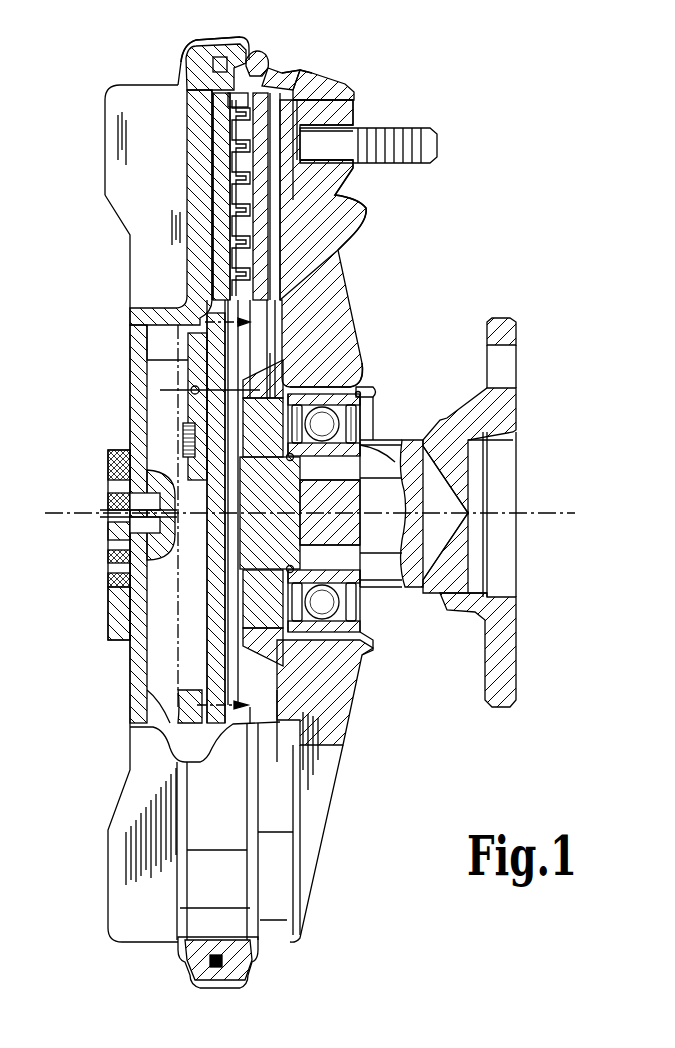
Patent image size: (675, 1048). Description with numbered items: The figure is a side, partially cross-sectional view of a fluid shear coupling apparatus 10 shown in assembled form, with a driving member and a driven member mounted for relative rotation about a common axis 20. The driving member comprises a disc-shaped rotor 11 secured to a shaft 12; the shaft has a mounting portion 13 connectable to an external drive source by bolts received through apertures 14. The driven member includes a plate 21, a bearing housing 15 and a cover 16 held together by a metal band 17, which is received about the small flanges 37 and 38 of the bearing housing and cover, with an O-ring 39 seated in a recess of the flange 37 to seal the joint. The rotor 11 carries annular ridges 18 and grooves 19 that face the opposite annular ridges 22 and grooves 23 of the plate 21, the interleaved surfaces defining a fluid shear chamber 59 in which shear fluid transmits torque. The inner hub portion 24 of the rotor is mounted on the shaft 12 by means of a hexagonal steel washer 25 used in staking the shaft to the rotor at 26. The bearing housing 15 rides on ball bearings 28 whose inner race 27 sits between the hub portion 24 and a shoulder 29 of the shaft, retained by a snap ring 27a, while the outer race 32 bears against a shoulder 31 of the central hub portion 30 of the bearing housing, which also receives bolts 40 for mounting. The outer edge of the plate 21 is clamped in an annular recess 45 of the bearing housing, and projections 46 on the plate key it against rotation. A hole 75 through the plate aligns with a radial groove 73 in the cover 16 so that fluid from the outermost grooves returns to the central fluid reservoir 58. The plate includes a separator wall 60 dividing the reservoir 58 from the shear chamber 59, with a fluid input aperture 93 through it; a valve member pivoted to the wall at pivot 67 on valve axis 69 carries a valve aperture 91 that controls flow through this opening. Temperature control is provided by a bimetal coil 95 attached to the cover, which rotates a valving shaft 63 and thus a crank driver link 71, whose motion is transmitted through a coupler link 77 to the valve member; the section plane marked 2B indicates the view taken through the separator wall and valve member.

The fluid shear coupling apparatus 10 is at (125, 957).
The rotor 11 is at (278, 291).
The shaft 12 is at (373, 553).
The mounting portion 13 is at (509, 412).
The apertures 14 is at (508, 366).
The bearing housing 15 is at (330, 102).
The cover 16 is at (130, 92).
The band 17 is at (225, 893).
The annular ridges 18 is at (232, 102).
The grooves 19 is at (236, 125).
The common axis 20 is at (70, 514).
The plate 21 is at (181, 80).
The annular ridges 22 is at (240, 146).
The grooves 23 is at (242, 168).
The hub portion 24 is at (228, 420).
The hexagonal steel washer 25 is at (293, 459).
The staking 26 is at (273, 456).
The inner race 27 is at (428, 466).
The retaining snap ring 27a is at (297, 551).
The ball bearings 28 is at (336, 641).
The shoulder 29 is at (365, 470).
The central hub portion 30 is at (352, 681).
The shoulder 31 is at (374, 388).
The outer race 32 is at (376, 378).
The flange 37 is at (252, 56).
The flange 38 is at (186, 58).
The O-ring 39 is at (224, 60).
The bolts 40 is at (437, 147).
The annular recess 45 is at (296, 92).
The projections 46 is at (258, 75).
The fluid reservoir 58 is at (157, 683).
The fluid shear chamber 59 is at (340, 198).
The separator wall 60 is at (208, 659).
The valving shaft 63 is at (108, 525).
The valve member pivot 67 is at (276, 380).
The valve axis 69 is at (245, 372).
The crank driver link 71 is at (235, 546).
The groove 73 is at (208, 242).
The hole 75 is at (298, 80).
The coupler link 77 is at (181, 443).
The valve aperture 91 is at (180, 369).
The fluid input aperture 93 is at (218, 344).
The bimetal coil 95 is at (110, 572).
The section line 2B is at (237, 520).